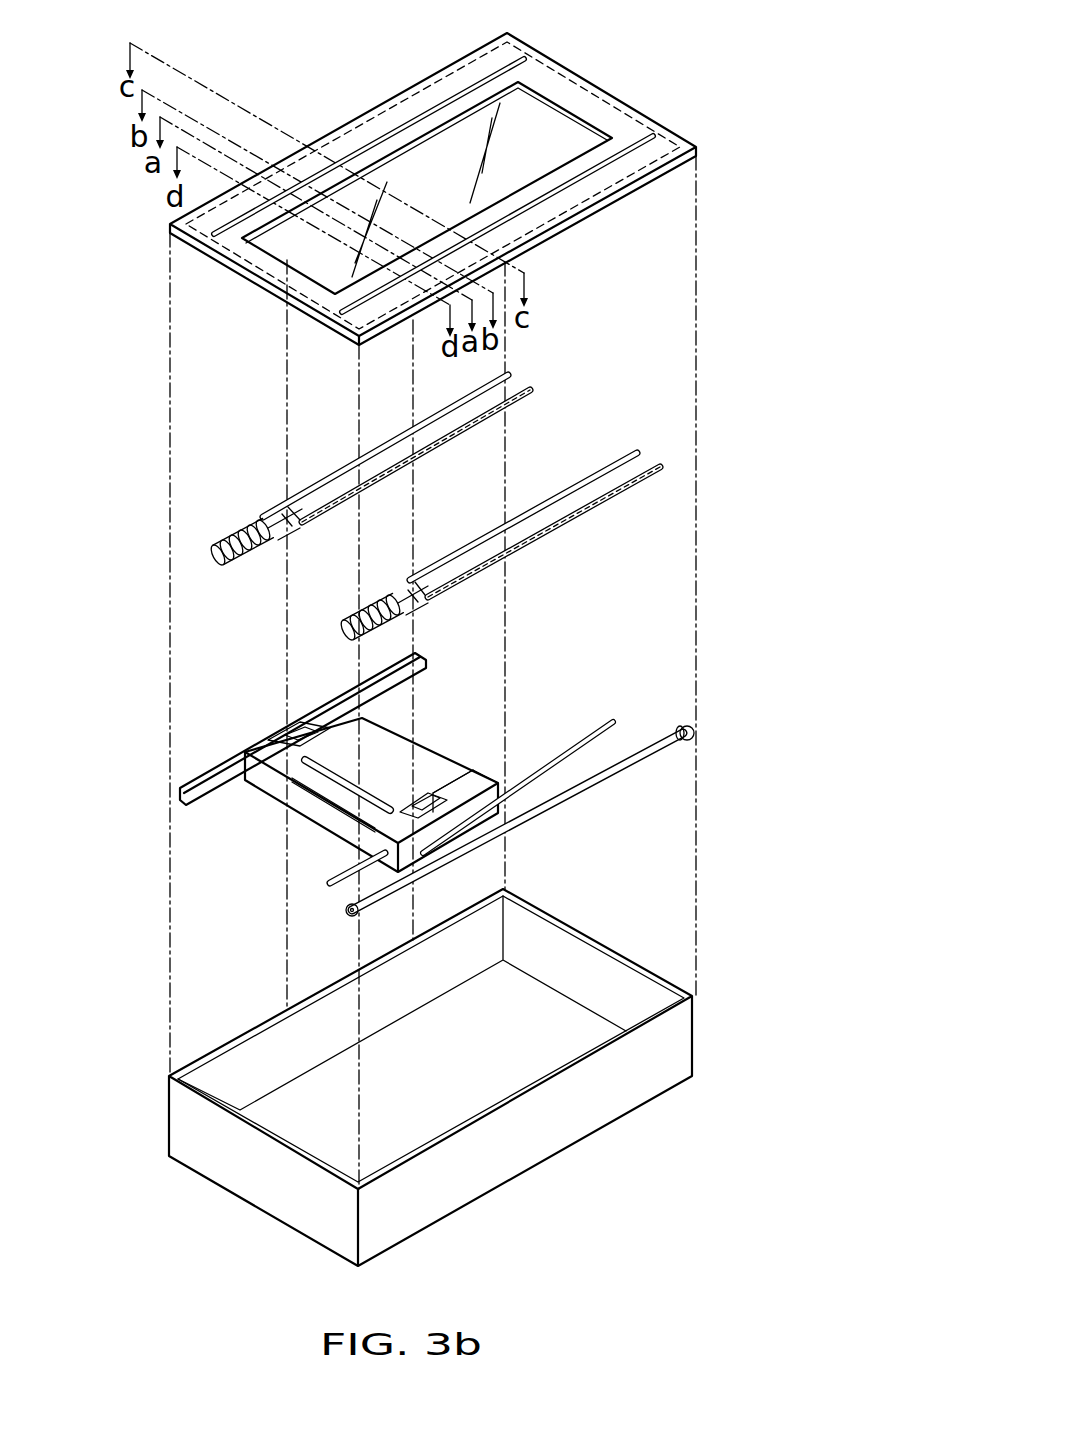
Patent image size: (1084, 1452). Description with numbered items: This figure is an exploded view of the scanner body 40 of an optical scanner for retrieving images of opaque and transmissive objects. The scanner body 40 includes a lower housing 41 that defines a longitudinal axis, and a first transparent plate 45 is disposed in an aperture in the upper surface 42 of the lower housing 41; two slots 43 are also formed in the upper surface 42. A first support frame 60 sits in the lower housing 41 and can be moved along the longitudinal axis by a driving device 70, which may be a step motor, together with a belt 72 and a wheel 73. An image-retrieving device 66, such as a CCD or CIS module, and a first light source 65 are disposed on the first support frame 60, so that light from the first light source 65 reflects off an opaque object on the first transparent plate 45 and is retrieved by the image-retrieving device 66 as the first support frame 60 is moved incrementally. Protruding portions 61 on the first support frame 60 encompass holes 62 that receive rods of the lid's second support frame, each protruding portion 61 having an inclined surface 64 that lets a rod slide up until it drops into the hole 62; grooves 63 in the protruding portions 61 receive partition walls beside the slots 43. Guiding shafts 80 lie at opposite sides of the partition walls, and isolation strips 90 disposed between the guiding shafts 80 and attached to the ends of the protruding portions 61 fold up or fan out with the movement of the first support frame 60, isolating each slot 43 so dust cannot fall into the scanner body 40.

The scanner body 40 is at (724, 33).
The lower housing 41 is at (580, 1111).
The upper surface 42 is at (445, 177).
The slots 43 is at (435, 102).
The first transparent plate 45 is at (398, 166).
The first support frame 60 is at (318, 830).
The protruding portions 61 is at (430, 800).
The holes 62 is at (413, 797).
The grooves 63 is at (437, 810).
The inclined surface 64 is at (333, 858).
The first light source 65 is at (308, 783).
The image-retrieving device 66 is at (290, 780).
The driving device 70 is at (543, 801).
The belt 72 is at (637, 735).
The wheel 73 is at (354, 922).
The guiding shafts 80 is at (508, 375).
The isolation strips 90 is at (450, 425).